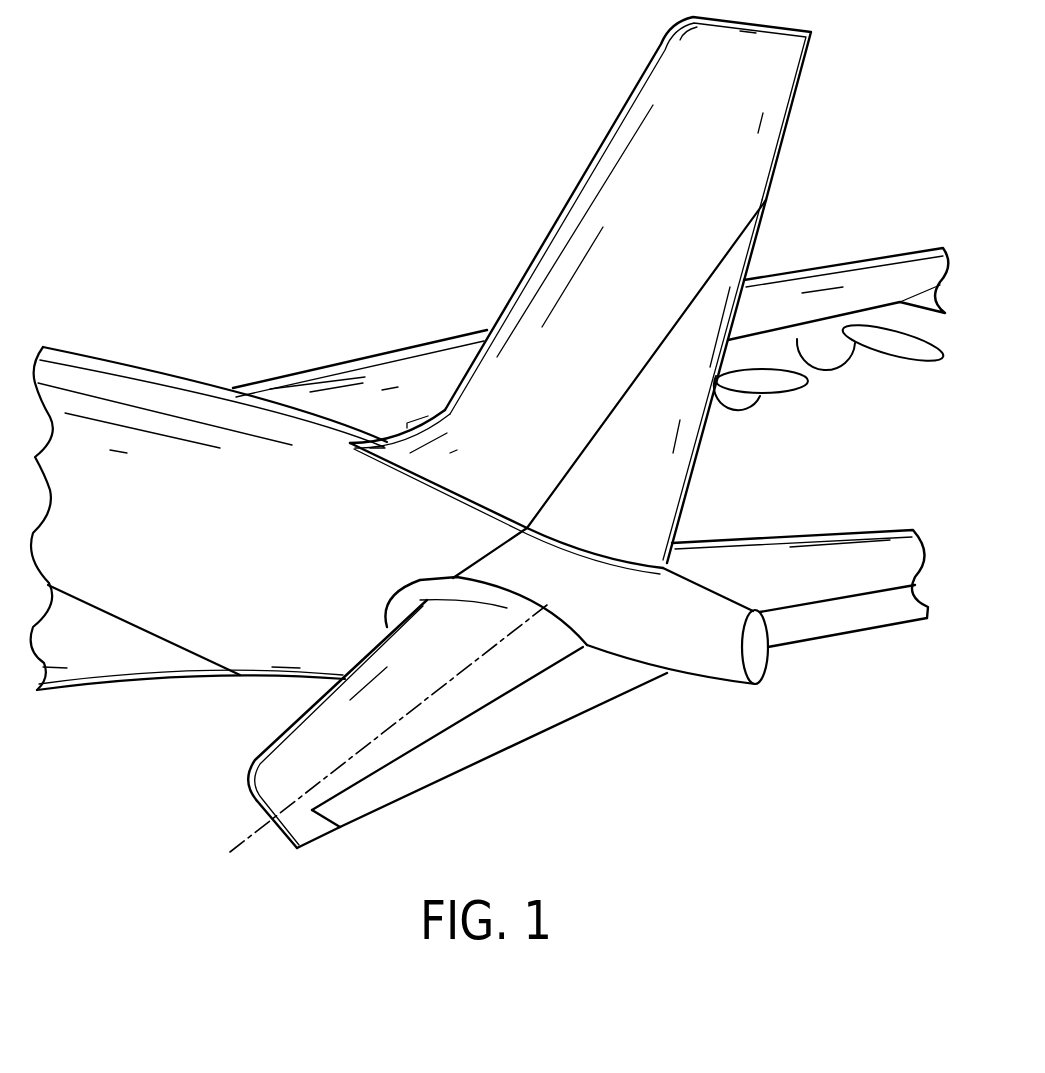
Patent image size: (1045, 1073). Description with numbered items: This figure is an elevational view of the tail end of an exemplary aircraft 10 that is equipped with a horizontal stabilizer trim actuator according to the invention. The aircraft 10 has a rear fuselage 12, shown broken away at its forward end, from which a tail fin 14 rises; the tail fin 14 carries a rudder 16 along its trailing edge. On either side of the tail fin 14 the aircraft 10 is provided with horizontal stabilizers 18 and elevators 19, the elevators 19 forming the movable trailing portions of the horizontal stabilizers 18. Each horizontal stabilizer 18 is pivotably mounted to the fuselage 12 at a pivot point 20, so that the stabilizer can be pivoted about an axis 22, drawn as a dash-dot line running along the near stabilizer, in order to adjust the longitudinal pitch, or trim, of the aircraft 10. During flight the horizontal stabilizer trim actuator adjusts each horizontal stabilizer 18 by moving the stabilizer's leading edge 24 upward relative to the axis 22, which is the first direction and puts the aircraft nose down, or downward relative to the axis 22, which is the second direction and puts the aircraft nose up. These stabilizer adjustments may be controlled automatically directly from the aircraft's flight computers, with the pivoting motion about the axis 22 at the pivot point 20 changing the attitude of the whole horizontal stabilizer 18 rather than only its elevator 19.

The aircraft 10 is at (240, 209).
The rear fuselage 12 is at (95, 406).
The tail fin 14 is at (762, 93).
The rudder 16 is at (683, 452).
The horizontal stabilizer 18 is at (876, 553).
The elevator 19 is at (867, 613).
The pivot point 20 is at (563, 624).
The axis 22 is at (242, 843).
The leading edge 24 is at (278, 734).